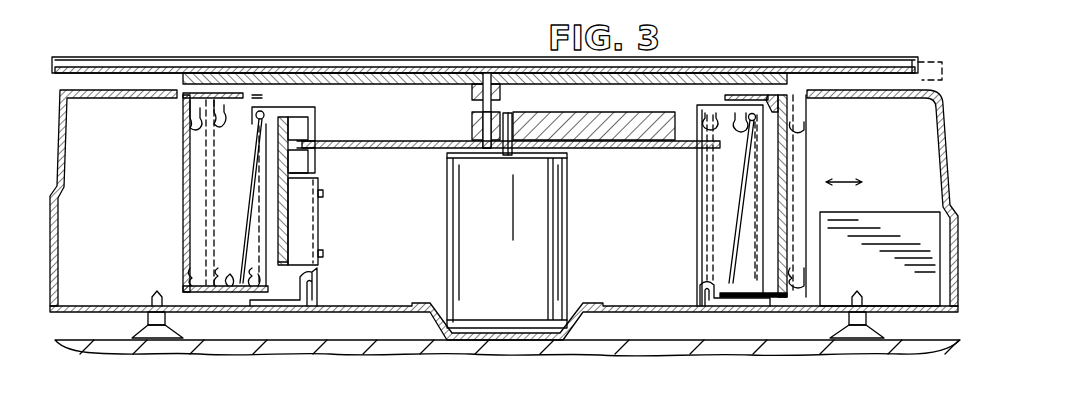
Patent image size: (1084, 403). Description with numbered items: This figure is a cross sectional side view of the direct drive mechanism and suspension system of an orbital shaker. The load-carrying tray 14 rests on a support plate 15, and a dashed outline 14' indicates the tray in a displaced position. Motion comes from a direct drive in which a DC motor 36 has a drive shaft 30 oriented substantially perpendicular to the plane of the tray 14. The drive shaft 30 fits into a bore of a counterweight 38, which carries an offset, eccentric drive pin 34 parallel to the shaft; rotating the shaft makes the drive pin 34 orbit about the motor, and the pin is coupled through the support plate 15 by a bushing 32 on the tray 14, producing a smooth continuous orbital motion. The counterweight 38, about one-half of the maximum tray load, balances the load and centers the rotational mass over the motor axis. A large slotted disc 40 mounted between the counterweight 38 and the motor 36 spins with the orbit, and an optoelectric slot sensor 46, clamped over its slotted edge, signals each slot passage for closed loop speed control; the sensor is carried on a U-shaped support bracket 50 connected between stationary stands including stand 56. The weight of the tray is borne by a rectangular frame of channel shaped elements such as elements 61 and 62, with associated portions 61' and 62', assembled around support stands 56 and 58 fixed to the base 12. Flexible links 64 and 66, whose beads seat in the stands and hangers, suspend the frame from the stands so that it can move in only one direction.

The base 12 is at (947, 130).
The tray 14 is at (485, 43).
The cover plate extension 14' is at (943, 41).
The support plate 15 is at (266, 80).
The drive shaft 30 is at (507, 114).
The bushing 32 is at (472, 100).
The drive pin 34 is at (470, 108).
The DC motor 36 is at (447, 236).
The counterweight 38 is at (625, 140).
The slotted disc 40 is at (662, 148).
The optoelectric slot sensor 46 is at (302, 158).
The U-shaped support bracket 50 is at (302, 237).
The support stand 56 is at (317, 127).
The support stand 58 is at (696, 252).
The channel shaped element 61 is at (198, 192).
The inner wall 61' is at (232, 192).
The channel shaped element 62 is at (796, 196).
The right channel 62' is at (834, 196).
The flexible link 64 is at (734, 221).
The flexible link 66 is at (245, 231).